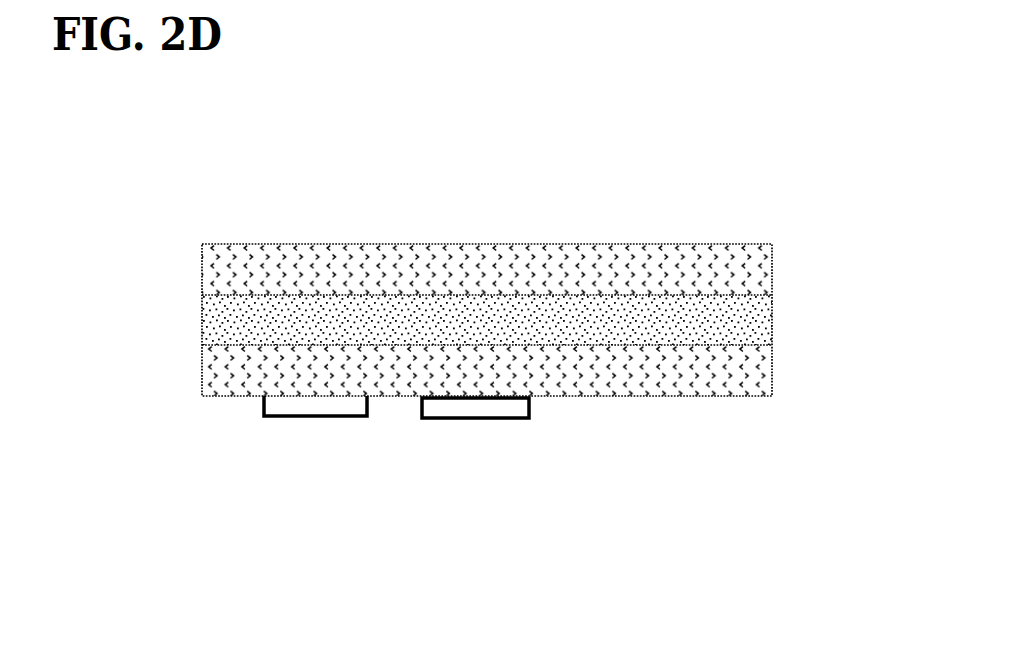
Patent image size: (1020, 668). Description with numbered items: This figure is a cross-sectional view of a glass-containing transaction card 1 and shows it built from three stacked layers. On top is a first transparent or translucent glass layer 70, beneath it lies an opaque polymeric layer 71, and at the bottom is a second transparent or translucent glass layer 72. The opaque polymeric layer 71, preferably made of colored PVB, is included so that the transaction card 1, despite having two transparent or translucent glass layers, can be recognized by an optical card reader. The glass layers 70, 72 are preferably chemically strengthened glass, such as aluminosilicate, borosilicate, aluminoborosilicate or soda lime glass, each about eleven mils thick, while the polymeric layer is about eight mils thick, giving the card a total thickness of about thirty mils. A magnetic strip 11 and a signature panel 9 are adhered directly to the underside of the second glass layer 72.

The transaction card 1 is at (484, 220).
The first transparent or translucent glass layer 70 is at (772, 270).
The opaque polymeric layer 71 is at (772, 323).
The second transparent or translucent glass layer 72 is at (772, 370).
The magnetic strip 11 is at (322, 422).
The signature panel 9 is at (477, 422).